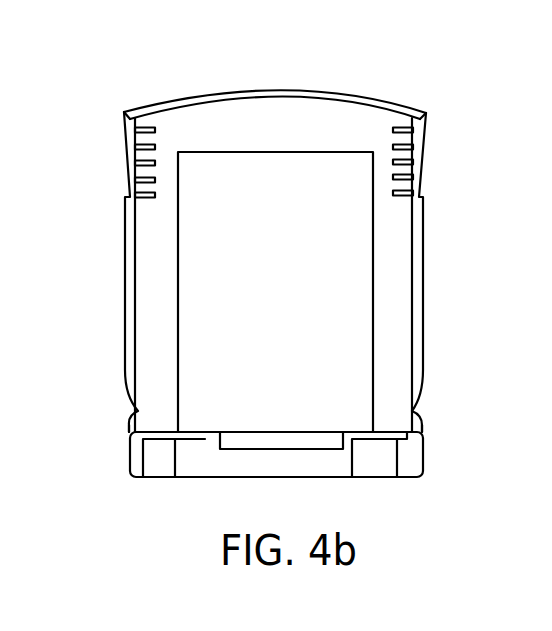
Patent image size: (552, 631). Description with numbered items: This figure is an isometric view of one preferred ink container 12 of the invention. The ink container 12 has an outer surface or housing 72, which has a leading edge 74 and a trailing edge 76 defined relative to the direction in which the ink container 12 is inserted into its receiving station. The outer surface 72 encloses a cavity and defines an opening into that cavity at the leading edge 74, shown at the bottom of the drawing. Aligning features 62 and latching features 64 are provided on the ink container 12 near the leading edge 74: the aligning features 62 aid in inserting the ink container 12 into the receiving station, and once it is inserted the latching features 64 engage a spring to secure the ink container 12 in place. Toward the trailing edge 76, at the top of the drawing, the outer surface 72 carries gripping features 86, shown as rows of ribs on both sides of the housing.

The ink container 12 is at (188, 97).
The trailing edge 76 is at (307, 92).
The gripping features 86 is at (137, 153).
The outer surface 72 is at (298, 293).
The latching features 64 is at (129, 422).
The aligning features 62 is at (129, 462).
The leading edge 74 is at (200, 478).